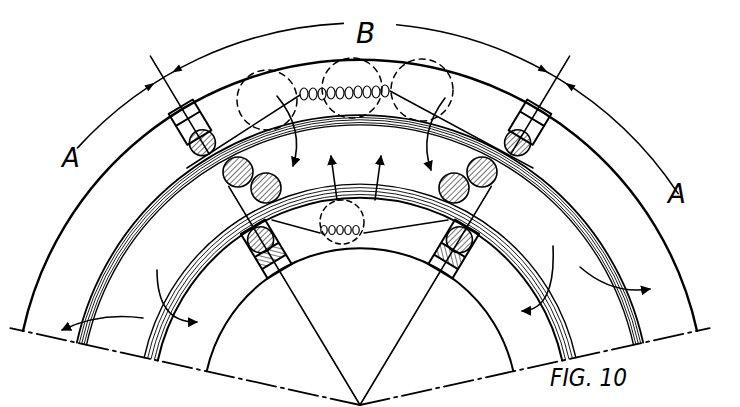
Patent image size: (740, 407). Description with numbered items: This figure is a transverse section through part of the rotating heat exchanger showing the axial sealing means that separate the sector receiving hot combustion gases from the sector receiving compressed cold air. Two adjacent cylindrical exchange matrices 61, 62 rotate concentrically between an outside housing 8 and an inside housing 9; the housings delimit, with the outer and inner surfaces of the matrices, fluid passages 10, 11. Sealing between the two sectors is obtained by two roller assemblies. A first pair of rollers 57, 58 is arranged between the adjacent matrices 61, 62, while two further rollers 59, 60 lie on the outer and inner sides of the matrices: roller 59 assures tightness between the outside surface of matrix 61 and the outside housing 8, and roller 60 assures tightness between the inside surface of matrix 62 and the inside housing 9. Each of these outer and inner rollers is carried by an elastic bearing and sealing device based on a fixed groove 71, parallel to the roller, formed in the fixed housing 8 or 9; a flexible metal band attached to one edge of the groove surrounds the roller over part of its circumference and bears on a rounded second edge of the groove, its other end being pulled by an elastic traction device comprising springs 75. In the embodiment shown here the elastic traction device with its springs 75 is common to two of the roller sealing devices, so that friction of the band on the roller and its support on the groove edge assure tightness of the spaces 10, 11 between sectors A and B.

The outside housing 8 is at (390, 57).
The inside housing 9 is at (368, 245).
The fluid passage 10 is at (478, 87).
The fluid passage 11 is at (405, 247).
The roller 57 is at (491, 169).
The roller 58 is at (468, 204).
The roller 59 is at (530, 151).
The roller 60 is at (470, 251).
The exchange matrix 61 is at (634, 321).
The exchange matrix 62 is at (562, 333).
The fixed groove 71 is at (538, 134).
The springs 75 is at (185, 367).